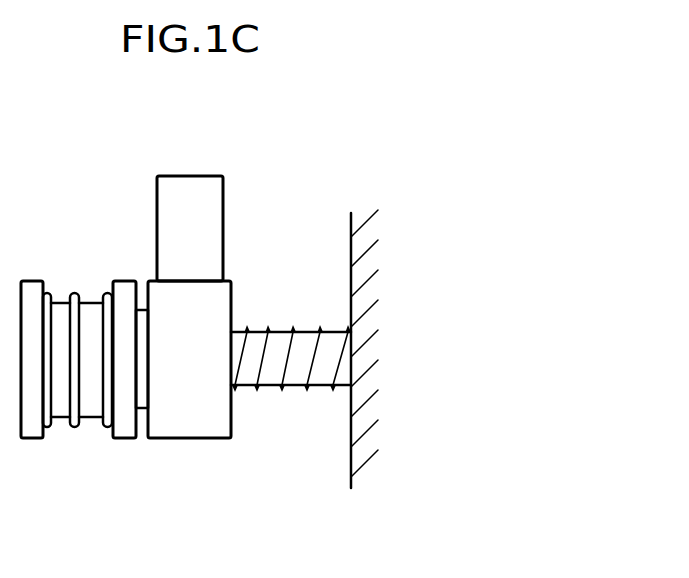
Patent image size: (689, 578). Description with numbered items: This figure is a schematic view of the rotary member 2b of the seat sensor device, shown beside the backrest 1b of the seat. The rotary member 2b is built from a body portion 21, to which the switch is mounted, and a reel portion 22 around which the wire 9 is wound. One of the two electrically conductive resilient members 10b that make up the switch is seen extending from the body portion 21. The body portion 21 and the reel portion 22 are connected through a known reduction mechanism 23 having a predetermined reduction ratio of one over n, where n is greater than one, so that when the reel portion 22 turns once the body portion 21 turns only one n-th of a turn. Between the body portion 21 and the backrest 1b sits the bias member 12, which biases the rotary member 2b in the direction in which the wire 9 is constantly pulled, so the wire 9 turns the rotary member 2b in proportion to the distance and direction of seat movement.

The backrest 1b is at (351, 250).
The rotary member 2b is at (195, 330).
The wire 9 is at (73, 293).
The resilient member 10b is at (190, 176).
The bias member 12 is at (275, 400).
The body portion 21 is at (180, 446).
The reel portion 22 is at (27, 440).
The reduction mechanism 23 is at (145, 409).